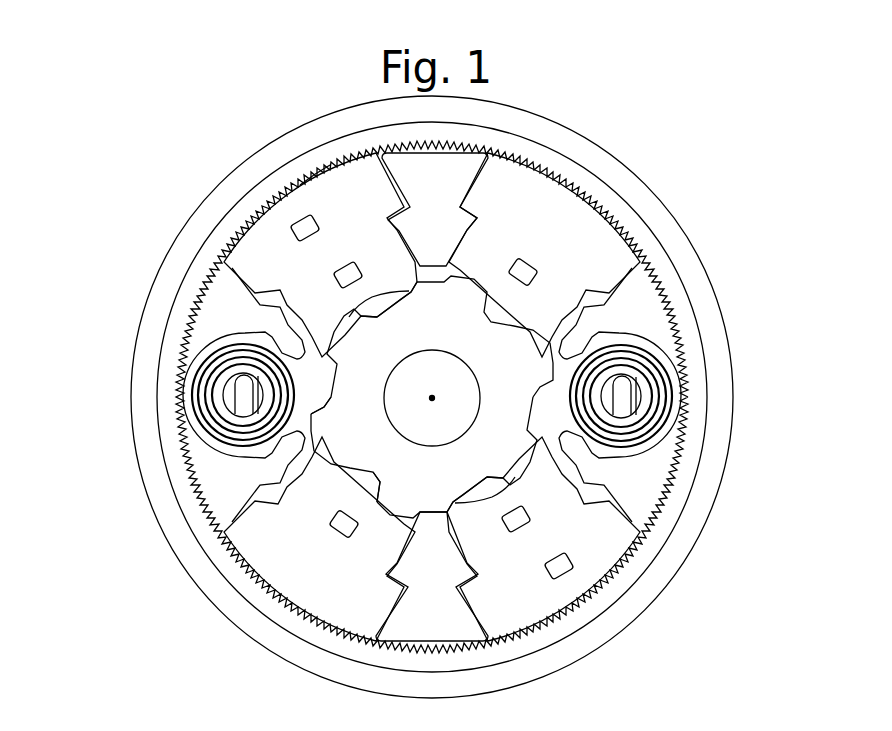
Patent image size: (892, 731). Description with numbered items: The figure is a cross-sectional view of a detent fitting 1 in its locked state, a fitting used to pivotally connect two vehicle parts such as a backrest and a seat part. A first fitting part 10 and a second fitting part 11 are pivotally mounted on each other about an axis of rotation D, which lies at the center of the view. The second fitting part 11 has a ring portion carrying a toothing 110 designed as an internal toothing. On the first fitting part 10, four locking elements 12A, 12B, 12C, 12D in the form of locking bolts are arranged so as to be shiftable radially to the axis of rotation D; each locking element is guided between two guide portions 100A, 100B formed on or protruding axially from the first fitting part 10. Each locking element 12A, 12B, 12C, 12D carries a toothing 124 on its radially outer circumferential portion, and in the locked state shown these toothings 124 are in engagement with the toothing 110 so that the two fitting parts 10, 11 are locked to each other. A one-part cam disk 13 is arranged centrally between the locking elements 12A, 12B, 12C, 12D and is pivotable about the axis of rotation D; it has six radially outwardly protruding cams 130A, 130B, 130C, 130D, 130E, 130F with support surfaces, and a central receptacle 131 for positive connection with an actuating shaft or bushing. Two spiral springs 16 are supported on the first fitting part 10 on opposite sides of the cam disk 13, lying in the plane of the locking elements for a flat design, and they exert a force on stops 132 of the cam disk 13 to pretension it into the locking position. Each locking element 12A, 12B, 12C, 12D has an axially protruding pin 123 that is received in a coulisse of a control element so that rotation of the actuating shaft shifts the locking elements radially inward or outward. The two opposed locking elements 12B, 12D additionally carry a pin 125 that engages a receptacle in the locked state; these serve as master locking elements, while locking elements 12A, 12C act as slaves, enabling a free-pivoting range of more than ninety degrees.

The detent fitting 1 is at (108, 188).
The first fitting part 10 is at (155, 312).
The second fitting part 11 is at (166, 368).
The toothing 110 is at (187, 408).
The toothing 124 is at (320, 170).
The pin 125 is at (305, 226).
The pin 123 is at (347, 271).
The locking element 12A is at (591, 233).
The locking element 12B is at (597, 550).
The locking element 12C is at (270, 548).
The locking element 12D is at (277, 240).
The cam disk 13 is at (390, 506).
The spring 16 is at (215, 452).
The guide portion 100A is at (460, 167).
The guide portion 100B is at (648, 312).
The cam 130A is at (450, 270).
The cam 130B is at (537, 330).
The cam 130C is at (518, 455).
The cam 130D is at (433, 490).
The cam 130E is at (340, 452).
The cam 130F is at (337, 320).
The central receptacle 131 is at (413, 368).
The stop 132 is at (316, 396).
The axis of rotation D is at (434, 397).